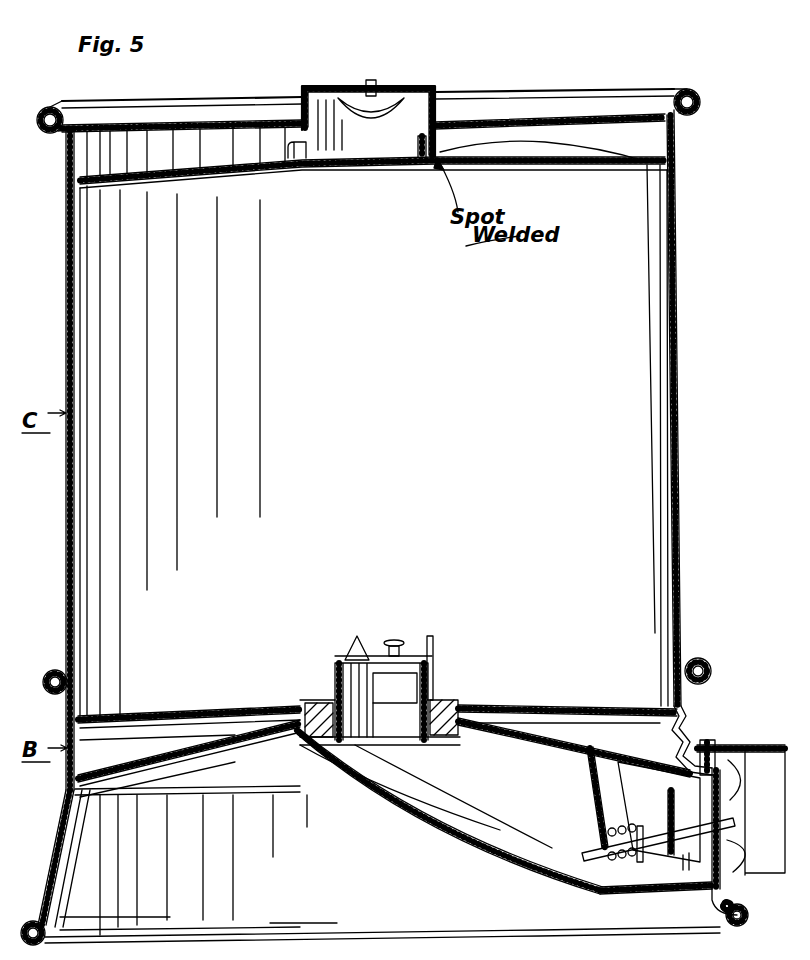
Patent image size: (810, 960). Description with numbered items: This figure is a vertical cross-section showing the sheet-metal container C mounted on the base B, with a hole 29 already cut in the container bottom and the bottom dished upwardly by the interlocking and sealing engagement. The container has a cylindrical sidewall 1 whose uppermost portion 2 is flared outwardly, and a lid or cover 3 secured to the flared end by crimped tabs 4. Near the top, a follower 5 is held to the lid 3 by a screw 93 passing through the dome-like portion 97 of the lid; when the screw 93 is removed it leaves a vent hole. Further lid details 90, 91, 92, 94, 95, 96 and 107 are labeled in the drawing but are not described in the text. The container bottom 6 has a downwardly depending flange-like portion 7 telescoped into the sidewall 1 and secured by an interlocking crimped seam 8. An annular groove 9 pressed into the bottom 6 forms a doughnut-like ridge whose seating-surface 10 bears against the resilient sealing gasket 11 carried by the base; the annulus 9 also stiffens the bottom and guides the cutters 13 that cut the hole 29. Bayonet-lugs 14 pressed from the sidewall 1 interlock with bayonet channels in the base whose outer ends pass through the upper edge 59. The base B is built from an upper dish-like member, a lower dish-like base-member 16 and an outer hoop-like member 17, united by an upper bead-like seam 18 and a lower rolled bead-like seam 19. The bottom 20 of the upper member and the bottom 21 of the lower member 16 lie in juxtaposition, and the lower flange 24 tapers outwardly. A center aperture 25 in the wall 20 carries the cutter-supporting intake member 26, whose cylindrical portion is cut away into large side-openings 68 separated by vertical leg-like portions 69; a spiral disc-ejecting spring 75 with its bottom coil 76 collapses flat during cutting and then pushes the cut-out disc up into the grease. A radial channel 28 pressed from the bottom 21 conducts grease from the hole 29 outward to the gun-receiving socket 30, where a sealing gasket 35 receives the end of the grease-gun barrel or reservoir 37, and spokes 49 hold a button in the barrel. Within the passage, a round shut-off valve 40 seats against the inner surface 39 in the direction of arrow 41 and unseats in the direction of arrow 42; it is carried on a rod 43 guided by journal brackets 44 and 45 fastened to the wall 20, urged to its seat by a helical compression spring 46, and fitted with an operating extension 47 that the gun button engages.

The cylindrical sidewall 1 is at (683, 445).
The uppermost portion 2 is at (682, 160).
The lid 3 is at (555, 120).
The crimped tabs 4 is at (48, 135).
The follower 5 is at (540, 162).
The bottom 6 is at (195, 707).
The flange-like portion 7 is at (158, 718).
The interlocking crimped seam 8 is at (662, 735).
The annular groove 9 is at (310, 703).
The seating-surface 10 is at (250, 707).
The sealing-gasket 11 is at (432, 745).
The cutters 13 is at (352, 648).
The bayonet-lugs 14 is at (656, 705).
The lower base-member 16 is at (266, 872).
The outer member 17 is at (64, 825).
The bead-like seam 18 is at (48, 678).
The rolled bead-like seam 19 is at (32, 920).
The bottom of upper member 20 is at (370, 733).
The bottom of lower member 21 is at (200, 760).
The lower flange 24 is at (65, 870).
The center aperture 25 is at (400, 745).
The cutter-supporting intake member 26 is at (432, 672).
The radial channel 28 is at (533, 807).
The hole 29 is at (332, 702).
The gun-receiving socket 30 is at (760, 745).
The sealing gasket 35 is at (740, 866).
The barrel 37 is at (773, 880).
The inner surface 39 is at (705, 873).
The shut-off valve 40 is at (667, 861).
The arrow 41 is at (665, 822).
The arrow 42 is at (636, 800).
The valve-stem 43 is at (595, 858).
The journal bracket 44 is at (610, 790).
The journal bracket 45 is at (656, 812).
The helical compression spring 46 is at (620, 858).
The operating extension 47 is at (735, 824).
The spokes 49 is at (736, 796).
The upper edge 59 is at (62, 668).
The side-openings 68 is at (394, 720).
The leg-like portions 69 is at (364, 688).
The disc-ejecting spring 75 is at (388, 640).
The bottom coil 76 is at (395, 652).
The bracket strip 90 is at (430, 142).
The upper rail 91 is at (538, 153).
The dome 92 is at (372, 111).
The screw 93 is at (371, 82).
The cover lining 94 is at (345, 98).
The lower rail 95 is at (664, 137).
The rear bead 96 is at (700, 104).
The dome-like portion 97 is at (438, 92).
The clip 107 is at (292, 160).